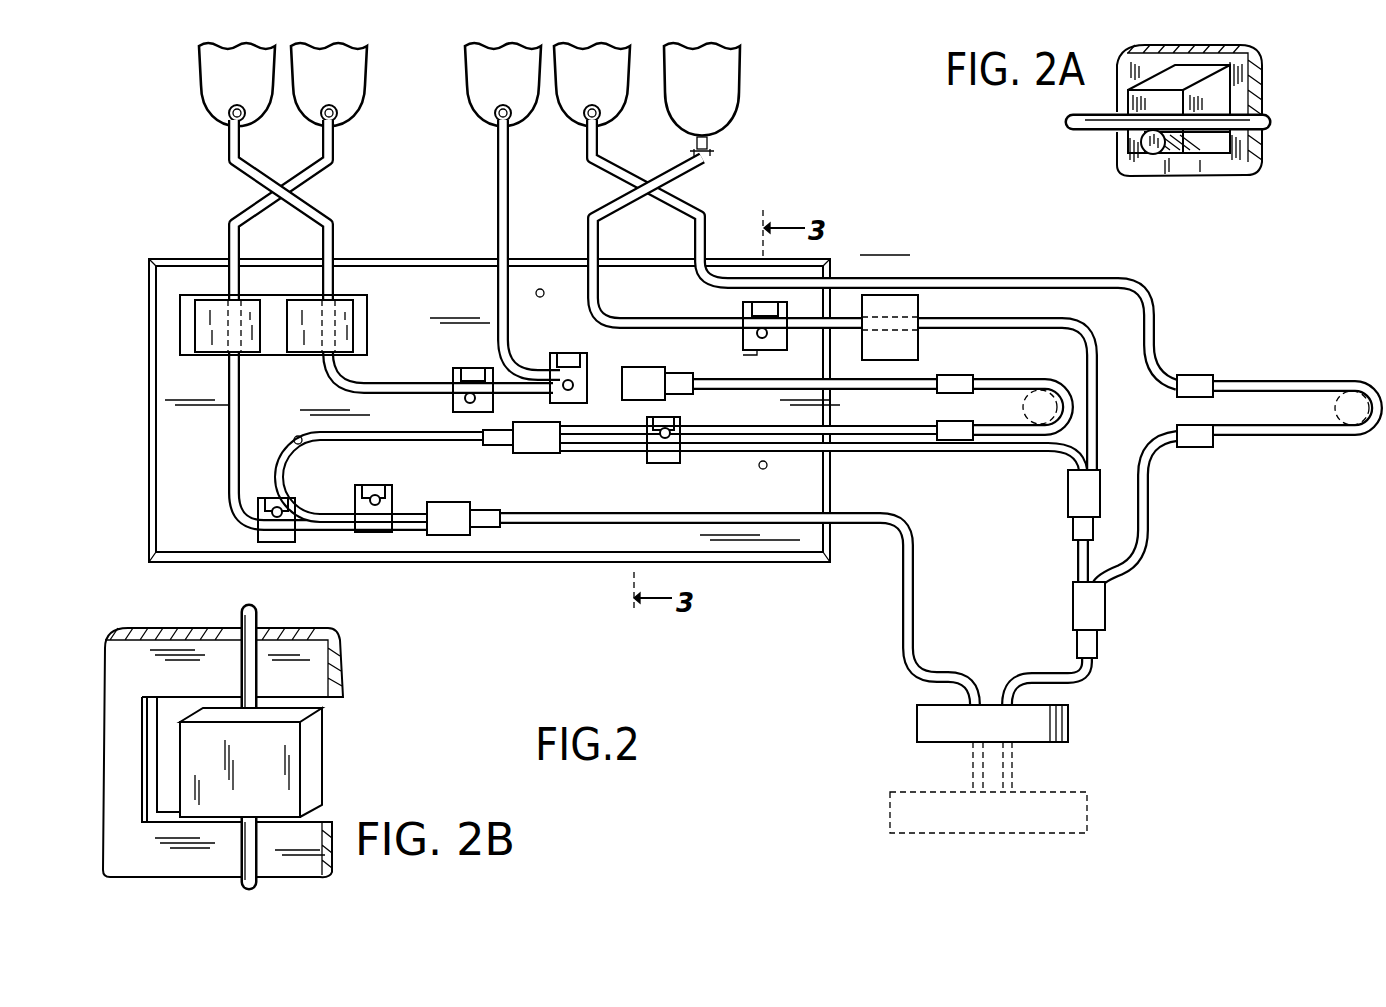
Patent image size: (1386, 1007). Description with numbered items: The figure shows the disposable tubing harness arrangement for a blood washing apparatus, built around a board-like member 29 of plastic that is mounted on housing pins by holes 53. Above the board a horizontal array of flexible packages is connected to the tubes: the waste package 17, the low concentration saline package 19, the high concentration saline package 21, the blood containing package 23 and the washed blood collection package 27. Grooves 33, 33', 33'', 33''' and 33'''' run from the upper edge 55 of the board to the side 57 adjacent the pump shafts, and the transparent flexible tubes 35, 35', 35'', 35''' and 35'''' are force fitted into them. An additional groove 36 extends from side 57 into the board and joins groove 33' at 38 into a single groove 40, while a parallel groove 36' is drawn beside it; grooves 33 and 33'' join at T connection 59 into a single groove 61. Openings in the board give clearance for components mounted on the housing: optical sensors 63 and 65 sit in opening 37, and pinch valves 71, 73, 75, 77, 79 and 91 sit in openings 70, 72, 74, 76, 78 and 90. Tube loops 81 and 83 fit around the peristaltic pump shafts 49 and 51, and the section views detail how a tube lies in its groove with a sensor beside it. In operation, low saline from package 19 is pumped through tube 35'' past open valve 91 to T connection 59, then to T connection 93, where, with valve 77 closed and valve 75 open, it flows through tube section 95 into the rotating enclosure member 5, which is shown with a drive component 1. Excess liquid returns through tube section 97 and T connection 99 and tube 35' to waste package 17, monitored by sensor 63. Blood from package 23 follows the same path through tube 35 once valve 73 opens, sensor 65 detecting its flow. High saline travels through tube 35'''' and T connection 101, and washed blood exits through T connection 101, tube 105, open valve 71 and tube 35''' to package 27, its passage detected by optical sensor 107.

In FIG. 2, the blood pump 1 is at (1070, 722).
In FIG. 2, the rotating enclosure member 5 is at (1087, 805).
In FIG. 2, the waste package 17 is at (364, 90).
In FIG. 2, the low concentration saline solution containing package 19 is at (467, 90).
In FIG. 2, the high concentration saline solution containing package 21 is at (613, 55).
In FIG. 2, the blood containing package 23 is at (200, 88).
In FIG. 2, the washed blood collection package 27 is at (738, 92).
In FIG. 2, the board-like member 29 is at (185, 445).
In FIG. 2A, the board-like member 29 is at (1262, 68).
In FIG. 2B, the board-like member 29 is at (165, 860).
In FIG. 2, the groove 33 is at (440, 307).
In FIG. 2, the groove 33' is at (303, 377).
In FIG. 2B, the groove 33' is at (220, 670).
In FIG. 2, the groove 33'' is at (502, 318).
In FIG. 2, the groove 33''' is at (729, 286).
In FIG. 2, the groove 33'''' is at (727, 292).
In FIG. 2A, the groove 33'''' is at (1291, 150).
In FIG. 2, the flexible tube 35 is at (248, 191).
In FIG. 2B, the flexible tube 35 is at (268, 747).
In FIG. 2, the flexible tube 35' is at (310, 191).
In FIG. 2, the flexible tube 35'' is at (470, 191).
In FIG. 2, the flexible tube 35''' is at (622, 191).
In FIG. 2A, the flexible tube 35''' is at (1165, 142).
In FIG. 2, the flexible tube 35'''' is at (675, 210).
In FIG. 2, the additional groove 36 is at (748, 411).
In FIG. 2, the tubing 36' is at (730, 464).
In FIG. 2, the opening 37 is at (180, 338).
In FIG. 2B, the opening 37 is at (172, 738).
In FIG. 2, the junction 38 is at (440, 505).
In FIG. 2, the single groove 40 is at (640, 518).
In FIG. 2, the pump shaft 49 is at (1038, 407).
In FIG. 2, the pump shaft 51 is at (1364, 432).
In FIG. 2, the holes 53 is at (544, 297).
In FIG. 2, the upper edge 55 is at (385, 260).
In FIG. 2, the side 57 is at (833, 272).
In FIG. 2, the T connection 59 is at (658, 378).
In FIG. 2, the single groove 61 is at (815, 369).
In FIG. 2, the optical sensor 63 is at (197, 315).
In FIG. 2B, the optical sensor 63 is at (192, 732).
In FIG. 2, the optical sensor 65 is at (353, 325).
In FIG. 2, the opening 70 is at (787, 312).
In FIG. 2A, the opening 70 is at (1217, 135).
In FIG. 2, the pinch valve 71 is at (767, 335).
In FIG. 2A, the pinch valve 71 is at (1152, 150).
In FIG. 2, the opening 72 is at (493, 400).
In FIG. 2, the pinch valve 73 is at (465, 398).
In FIG. 2, the opening 74 is at (650, 458).
In FIG. 2, the pinch valve 75 is at (683, 458).
In FIG. 2, the opening 76 is at (385, 488).
In FIG. 2, the pinch valve 77 is at (381, 500).
In FIG. 2, the opening 78 is at (300, 542).
In FIG. 2, the pinch valve 79 is at (280, 498).
In FIG. 2, the loop 81 is at (1028, 382).
In FIG. 2, the loop 83 is at (1378, 382).
In FIG. 2, the opening 90 is at (575, 400).
In FIG. 2, the pinch valve 91 is at (582, 362).
In FIG. 2, the T connection 93 is at (515, 454).
In FIG. 2, the tube section 95 is at (1016, 455).
In FIG. 2, the tube section 97 is at (900, 648).
In FIG. 2, the T connection 99 is at (460, 535).
In FIG. 2, the T connection 101 is at (1105, 602).
In FIG. 2, the tube 105 is at (1097, 385).
In FIG. 2, the optical sensor 107 is at (905, 300).